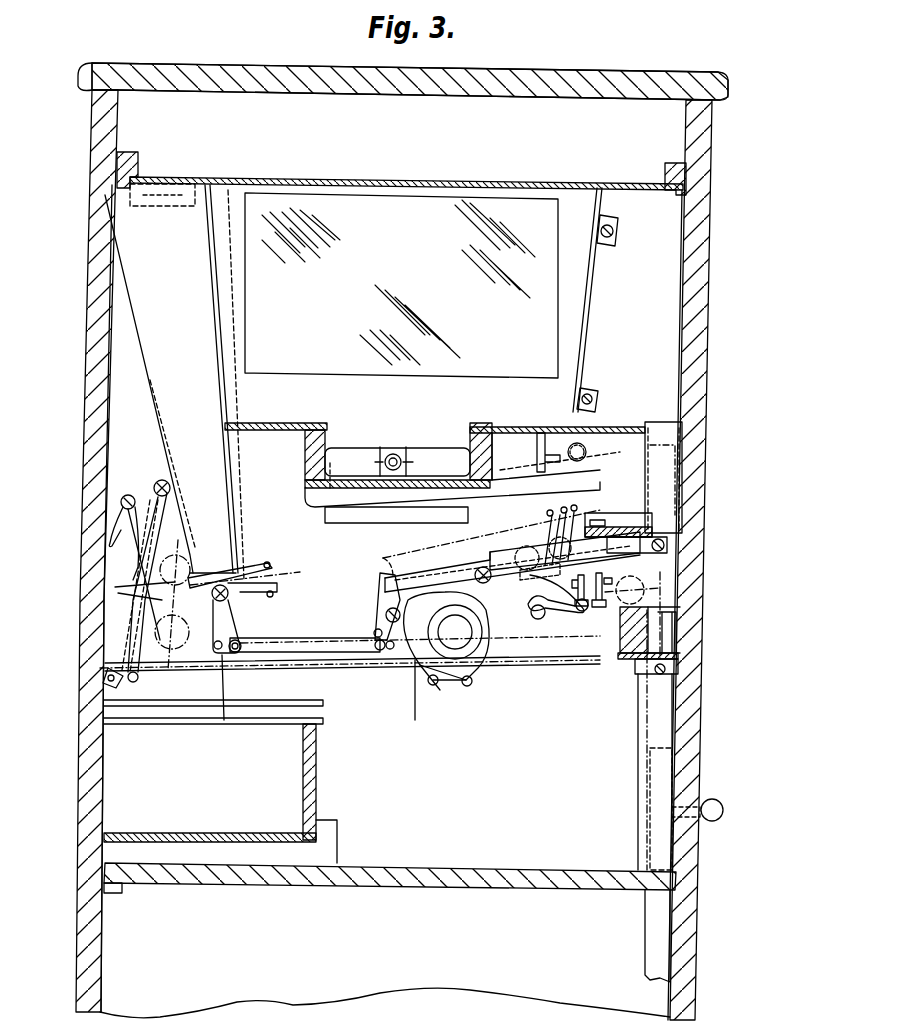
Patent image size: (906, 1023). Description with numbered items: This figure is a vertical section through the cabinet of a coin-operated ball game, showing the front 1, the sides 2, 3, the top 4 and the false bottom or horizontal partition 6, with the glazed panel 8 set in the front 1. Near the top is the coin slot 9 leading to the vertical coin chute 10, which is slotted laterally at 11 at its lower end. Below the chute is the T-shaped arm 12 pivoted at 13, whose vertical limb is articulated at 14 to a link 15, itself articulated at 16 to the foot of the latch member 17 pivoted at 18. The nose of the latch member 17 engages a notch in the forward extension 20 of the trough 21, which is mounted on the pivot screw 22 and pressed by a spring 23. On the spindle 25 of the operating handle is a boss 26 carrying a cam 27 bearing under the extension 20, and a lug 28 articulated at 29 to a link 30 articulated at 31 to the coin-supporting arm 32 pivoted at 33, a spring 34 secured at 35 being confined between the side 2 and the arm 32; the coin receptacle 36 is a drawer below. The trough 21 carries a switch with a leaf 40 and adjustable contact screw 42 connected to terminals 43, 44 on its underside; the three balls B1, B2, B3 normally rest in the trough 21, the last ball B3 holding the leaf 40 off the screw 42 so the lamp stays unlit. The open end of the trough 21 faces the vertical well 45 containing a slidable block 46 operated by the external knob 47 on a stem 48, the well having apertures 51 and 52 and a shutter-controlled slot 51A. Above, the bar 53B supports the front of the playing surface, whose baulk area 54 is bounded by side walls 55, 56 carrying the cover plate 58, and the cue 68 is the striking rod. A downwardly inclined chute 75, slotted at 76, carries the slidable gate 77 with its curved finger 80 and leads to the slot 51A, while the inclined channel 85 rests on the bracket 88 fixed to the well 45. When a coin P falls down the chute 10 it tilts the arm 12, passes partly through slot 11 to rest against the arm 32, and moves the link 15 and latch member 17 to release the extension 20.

The front 1 is at (457, 791).
The side 2 is at (100, 892).
The side 3 is at (686, 882).
The top 4 is at (600, 80).
The false bottom or horizontal partition 6 is at (355, 882).
The glazed panel 8 is at (420, 362).
The coin slot 9 is at (169, 206).
The coin chute 10 is at (185, 310).
The lateral slot 11 is at (190, 543).
The T-shaped arm 12 is at (213, 603).
The pivot 13 is at (227, 597).
The articulation 14 is at (223, 660).
The link 15 is at (292, 642).
The articulation 16 is at (393, 690).
The latch member 17 is at (380, 576).
The pivot 18 is at (386, 614).
The forward extension 20 is at (406, 585).
The trough 21 is at (512, 562).
The pivot screw 22 is at (486, 583).
The spring 23 is at (552, 615).
The spindle 25 is at (462, 638).
The boss 26 is at (470, 648).
The cam 27 is at (413, 640).
The lug 28 is at (460, 665).
The articulation 29 is at (435, 683).
The link 30 is at (352, 690).
The articulation 31 is at (136, 685).
The coin-supporting arm 32 is at (172, 605).
The pivot 33 is at (160, 483).
The spring 34 is at (135, 515).
The securing point 35 is at (127, 497).
The coin receptacle 36 is at (220, 781).
The leaf 40 is at (543, 537).
The adjustable contact screw 42 is at (575, 528).
The terminal 43 is at (583, 607).
The terminal 44 is at (600, 608).
The vertical well 45 is at (642, 715).
The slidable block 46 is at (660, 773).
The external knob 47 is at (713, 822).
The stem 48 is at (672, 812).
The aperture 51 is at (685, 606).
The shutter-controlled slot 51A is at (680, 438).
The aperture 52 is at (660, 640).
The bar 53B is at (360, 512).
The baulk area 54 is at (325, 495).
The side wall 55 is at (472, 435).
The side wall 56 is at (305, 450).
The cover plate 58 is at (275, 423).
The striking device or cue 68 is at (390, 454).
The chute 75 is at (621, 450).
The slots 76 is at (556, 456).
The gate 77 is at (540, 452).
The curved finger 80 is at (562, 447).
The inclined channel 85 is at (618, 523).
The bracket 88 is at (630, 555).
The ball B1 is at (520, 560).
The ball B2 is at (545, 540).
The ball B3 is at (710, 562).
The coin P is at (139, 581).